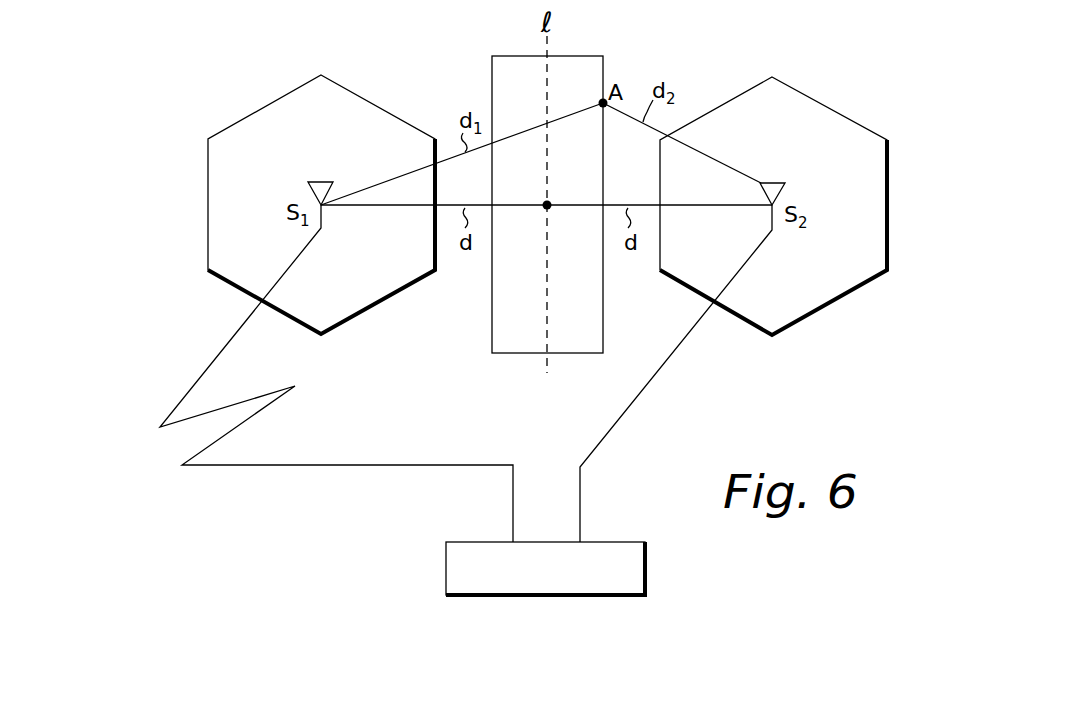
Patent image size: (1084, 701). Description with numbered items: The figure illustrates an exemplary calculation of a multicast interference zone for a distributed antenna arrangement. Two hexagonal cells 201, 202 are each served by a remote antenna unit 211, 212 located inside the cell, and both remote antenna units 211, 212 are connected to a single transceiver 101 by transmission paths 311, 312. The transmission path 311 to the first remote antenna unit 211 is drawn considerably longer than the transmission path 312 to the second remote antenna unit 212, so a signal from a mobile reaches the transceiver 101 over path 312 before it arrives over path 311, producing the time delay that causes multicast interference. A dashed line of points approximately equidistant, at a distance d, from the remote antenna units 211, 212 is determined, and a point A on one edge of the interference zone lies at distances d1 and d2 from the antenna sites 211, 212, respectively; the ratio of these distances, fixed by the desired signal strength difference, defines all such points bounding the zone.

The first cell 201 is at (263, 107).
The second cell 202 is at (822, 103).
The remote antenna unit 211 is at (315, 182).
The remote antenna unit 212 is at (782, 182).
The transmission path 311 is at (343, 467).
The transmission path 312 is at (643, 393).
The transceiver 101 is at (646, 568).